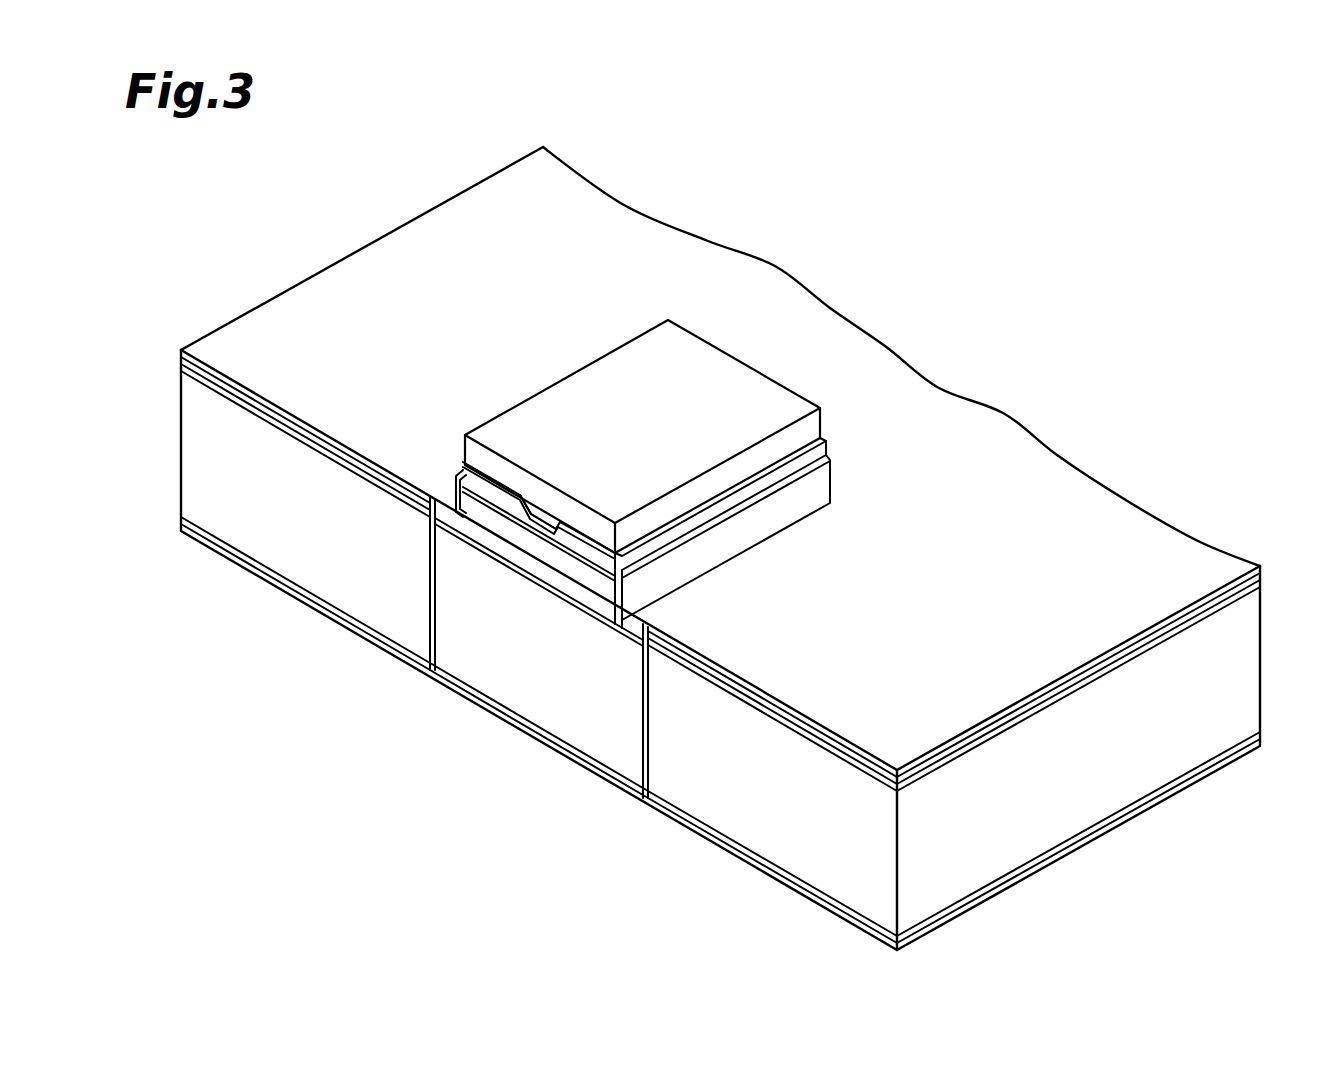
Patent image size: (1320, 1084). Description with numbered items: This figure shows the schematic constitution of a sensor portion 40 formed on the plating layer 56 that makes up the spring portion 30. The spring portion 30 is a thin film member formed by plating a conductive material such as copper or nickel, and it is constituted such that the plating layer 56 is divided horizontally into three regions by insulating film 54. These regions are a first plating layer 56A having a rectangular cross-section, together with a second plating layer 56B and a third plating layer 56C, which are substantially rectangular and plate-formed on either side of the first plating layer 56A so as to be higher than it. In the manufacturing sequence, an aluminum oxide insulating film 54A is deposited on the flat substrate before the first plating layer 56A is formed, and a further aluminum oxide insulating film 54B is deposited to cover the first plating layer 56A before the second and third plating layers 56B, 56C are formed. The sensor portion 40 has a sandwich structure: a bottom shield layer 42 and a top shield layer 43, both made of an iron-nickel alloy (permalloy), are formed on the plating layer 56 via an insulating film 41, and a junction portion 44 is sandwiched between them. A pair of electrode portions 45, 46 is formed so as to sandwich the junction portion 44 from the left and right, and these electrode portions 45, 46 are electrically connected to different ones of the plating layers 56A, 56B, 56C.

The spring portion 30 is at (720, 548).
The sensor portion 40 is at (672, 388).
The insulating film 41 is at (573, 600).
The bottom shield layer 42 is at (630, 603).
The top shield layer 43 is at (586, 527).
The junction portion 44 is at (535, 518).
The electrode portion 45 is at (637, 572).
The electrode portion 46 is at (463, 468).
The insulating film 54 is at (522, 697).
The insulating film 54A is at (565, 748).
The insulating film 54B is at (428, 602).
The plating layer 56 is at (720, 653).
The first plating layer 56A is at (522, 697).
The second plating layer 56B is at (297, 548).
The third plating layer 56C is at (760, 822).